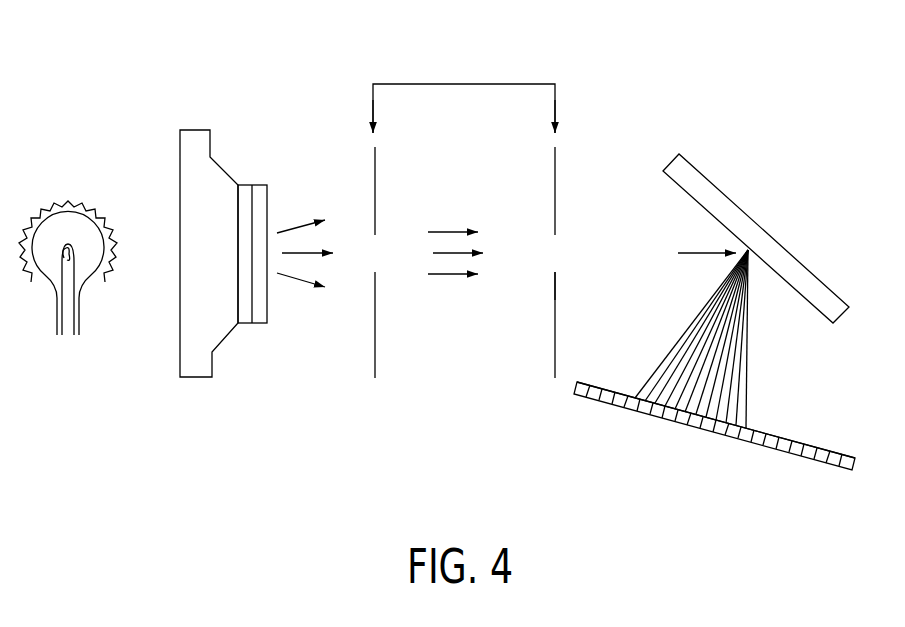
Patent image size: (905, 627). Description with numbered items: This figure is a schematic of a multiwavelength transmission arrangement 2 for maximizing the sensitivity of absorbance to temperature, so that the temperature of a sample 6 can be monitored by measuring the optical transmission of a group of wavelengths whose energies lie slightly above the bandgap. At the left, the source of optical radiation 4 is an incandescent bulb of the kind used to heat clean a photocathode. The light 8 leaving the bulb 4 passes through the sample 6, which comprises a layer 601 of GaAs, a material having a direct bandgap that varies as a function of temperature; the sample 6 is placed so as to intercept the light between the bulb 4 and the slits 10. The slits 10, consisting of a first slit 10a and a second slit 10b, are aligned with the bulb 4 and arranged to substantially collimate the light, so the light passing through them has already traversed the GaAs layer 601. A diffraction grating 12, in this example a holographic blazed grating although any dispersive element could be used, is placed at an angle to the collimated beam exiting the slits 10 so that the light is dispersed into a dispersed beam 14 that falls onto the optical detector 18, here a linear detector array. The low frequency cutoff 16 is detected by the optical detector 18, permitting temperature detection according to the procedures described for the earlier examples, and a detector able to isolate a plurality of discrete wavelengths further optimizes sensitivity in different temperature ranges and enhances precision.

The optical measuring arrangement 2 is at (278, 452).
The source of optical radiation 4 is at (63, 232).
The sample 6 is at (187, 140).
The layer 601 is at (255, 323).
The light beam 8 is at (300, 226).
The slits 10 is at (568, 377).
The slit 10a is at (376, 254).
The slit 10b is at (556, 252).
The diffraction grating 12 is at (747, 215).
The dispersed beam 14 is at (763, 353).
The low frequency cutoff 16 is at (738, 438).
The optical detector 18 is at (858, 472).